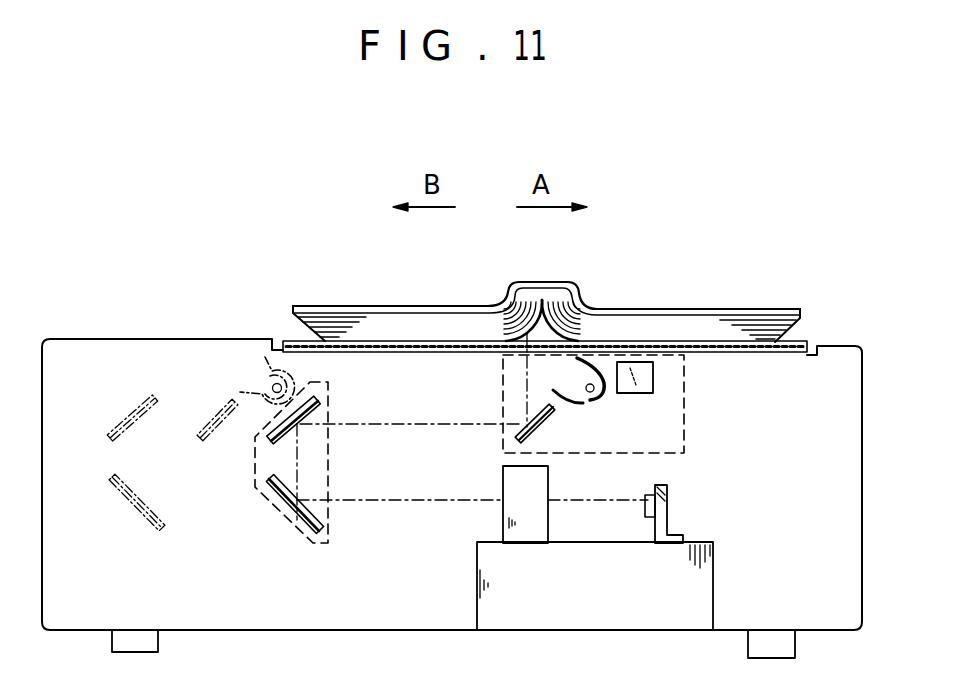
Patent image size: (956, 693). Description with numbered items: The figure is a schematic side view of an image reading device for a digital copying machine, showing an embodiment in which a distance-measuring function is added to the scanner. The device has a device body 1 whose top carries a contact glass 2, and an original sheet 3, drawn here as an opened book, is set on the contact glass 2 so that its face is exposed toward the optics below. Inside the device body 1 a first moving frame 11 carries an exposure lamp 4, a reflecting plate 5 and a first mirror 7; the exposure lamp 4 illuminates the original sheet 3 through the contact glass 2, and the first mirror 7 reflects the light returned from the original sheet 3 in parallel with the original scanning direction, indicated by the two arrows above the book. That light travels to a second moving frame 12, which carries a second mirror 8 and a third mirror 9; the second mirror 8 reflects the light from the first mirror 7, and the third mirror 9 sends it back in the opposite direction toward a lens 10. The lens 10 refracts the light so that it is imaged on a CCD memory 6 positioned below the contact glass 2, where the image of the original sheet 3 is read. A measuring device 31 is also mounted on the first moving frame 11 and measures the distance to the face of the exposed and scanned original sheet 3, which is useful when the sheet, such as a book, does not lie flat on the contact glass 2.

The device body 1 is at (112, 336).
The contact glass 2 is at (384, 351).
The original sheet 3 is at (664, 320).
The exposure lamp 4 is at (603, 392).
The reflecting plate 5 is at (582, 405).
The CCD memory 6 is at (646, 498).
The first mirror 7 is at (538, 427).
The second mirror 8 is at (270, 440).
The third mirror 9 is at (283, 500).
The lens 10 is at (503, 482).
The first moving frame 11 is at (685, 445).
The second moving frame 12 is at (300, 532).
The measuring device 31 is at (653, 378).